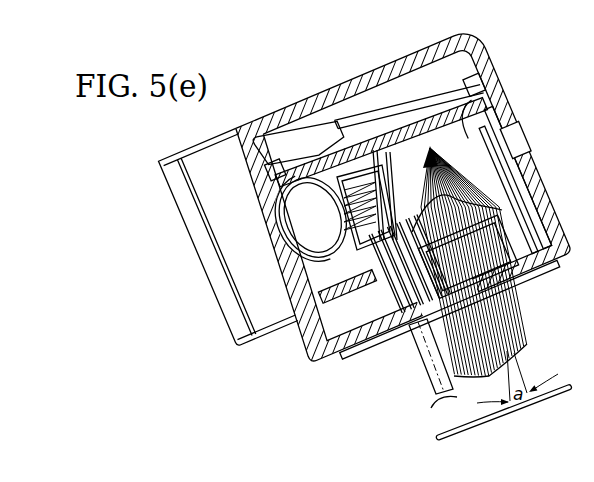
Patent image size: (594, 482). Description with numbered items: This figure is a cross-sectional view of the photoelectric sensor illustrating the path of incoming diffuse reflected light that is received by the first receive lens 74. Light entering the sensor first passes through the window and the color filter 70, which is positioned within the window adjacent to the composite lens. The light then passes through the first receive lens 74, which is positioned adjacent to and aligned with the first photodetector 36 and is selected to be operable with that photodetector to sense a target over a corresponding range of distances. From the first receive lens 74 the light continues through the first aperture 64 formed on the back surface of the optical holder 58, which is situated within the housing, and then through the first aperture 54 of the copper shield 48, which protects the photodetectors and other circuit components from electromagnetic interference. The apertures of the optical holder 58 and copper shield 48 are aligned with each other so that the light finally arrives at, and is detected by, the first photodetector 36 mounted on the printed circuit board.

The first photodetector 36 is at (438, 118).
The copper shield 48 is at (477, 72).
The first aperture 54 is at (404, 92).
The optical holder 58 is at (497, 118).
The first aperture 64 is at (429, 172).
The color filter 70 is at (519, 287).
The first receive lens 74 is at (513, 142).